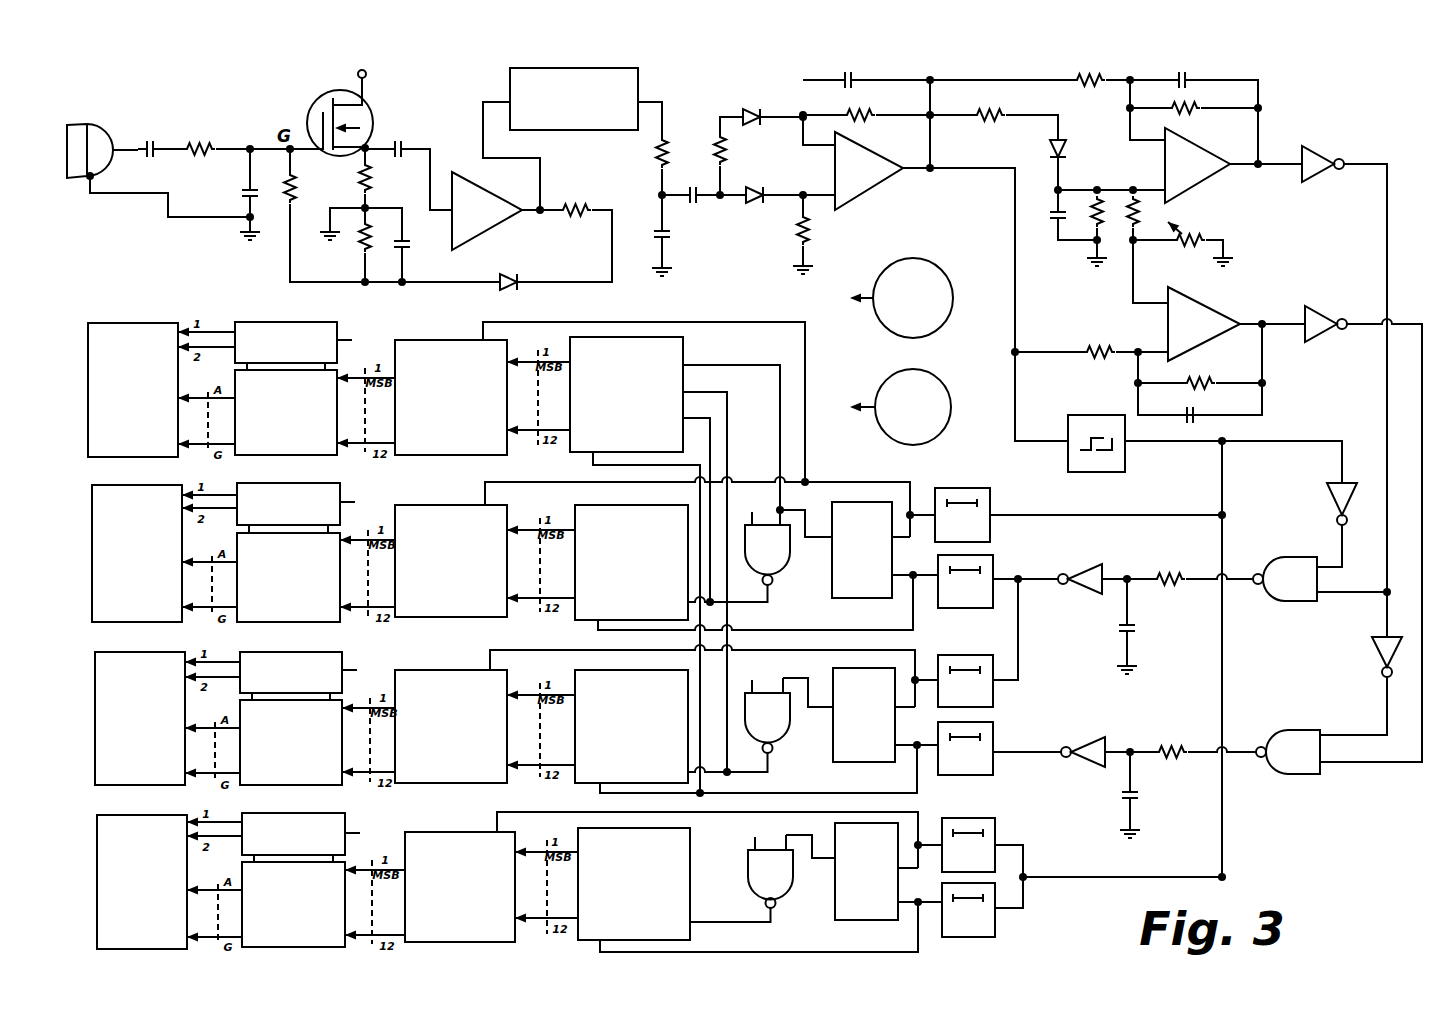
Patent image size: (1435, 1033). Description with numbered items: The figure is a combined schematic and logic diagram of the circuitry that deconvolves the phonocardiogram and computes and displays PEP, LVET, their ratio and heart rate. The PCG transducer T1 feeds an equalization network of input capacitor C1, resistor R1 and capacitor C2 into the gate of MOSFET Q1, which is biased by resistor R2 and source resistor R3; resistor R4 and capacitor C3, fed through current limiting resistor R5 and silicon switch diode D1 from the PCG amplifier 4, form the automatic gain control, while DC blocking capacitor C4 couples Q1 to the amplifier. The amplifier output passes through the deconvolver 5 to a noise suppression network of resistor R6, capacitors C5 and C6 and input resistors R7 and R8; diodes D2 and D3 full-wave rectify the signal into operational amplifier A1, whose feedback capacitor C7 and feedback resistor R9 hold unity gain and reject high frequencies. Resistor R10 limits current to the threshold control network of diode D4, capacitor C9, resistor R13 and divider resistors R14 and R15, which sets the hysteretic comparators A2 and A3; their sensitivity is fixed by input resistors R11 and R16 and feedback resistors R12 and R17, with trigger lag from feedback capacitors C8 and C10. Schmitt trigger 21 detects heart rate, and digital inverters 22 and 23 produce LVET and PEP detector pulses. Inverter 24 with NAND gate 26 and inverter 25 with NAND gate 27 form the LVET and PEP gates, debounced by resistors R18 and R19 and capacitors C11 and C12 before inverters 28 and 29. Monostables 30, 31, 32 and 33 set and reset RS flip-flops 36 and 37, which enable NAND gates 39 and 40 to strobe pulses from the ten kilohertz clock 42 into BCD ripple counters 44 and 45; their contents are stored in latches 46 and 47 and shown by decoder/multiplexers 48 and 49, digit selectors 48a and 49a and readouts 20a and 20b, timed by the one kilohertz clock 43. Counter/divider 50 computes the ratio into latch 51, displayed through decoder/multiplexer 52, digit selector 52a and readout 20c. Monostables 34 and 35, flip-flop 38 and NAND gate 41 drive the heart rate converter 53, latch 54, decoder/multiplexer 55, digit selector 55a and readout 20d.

The PCG transducer T1 is at (158, 160).
The input capacitor C1 is at (150, 135).
The resistor R1 is at (242, 135).
The capacitor C2 is at (231, 194).
The resistor R2 is at (392, 215).
The MOSFET Q1 is at (351, 113).
The source resistor R3 is at (378, 178).
The resistor R4 is at (350, 247).
The capacitor C3 is at (413, 259).
The DC blocking capacitor C4 is at (408, 162).
The PCG amplifier 4 is at (490, 190).
The current limiting resistor R5 is at (564, 231).
The silicon switch diode D1 is at (510, 272).
The deconvolver 5 is at (638, 100).
The resistor R6 is at (648, 166).
The capacitor C5 is at (677, 235).
The capacitor C6 is at (691, 208).
The input resistor R7 is at (736, 156).
The silicon switch diode D2 is at (773, 102).
The silicon switch diode D3 is at (777, 206).
The input resistor R8 is at (818, 234).
The operational amplifier A1 is at (869, 171).
The negative feedback capacitor C7 is at (858, 71).
The feedback resistor R9 is at (871, 105).
The resistor R10 is at (994, 125).
The silicon switch diode D4 is at (1076, 166).
The capacitor C9 is at (1060, 218).
The resistor R13 is at (1090, 216).
The divider resistor R14 is at (1142, 234).
The trimmer resistor R15 is at (1183, 238).
The input resistor R11 is at (1050, 67).
The feedback capacitor C8 is at (1214, 106).
The feedback resistor R12 is at (1194, 110).
The hysteretic comparator A2 is at (1197, 165).
The hysteretic comparator A3 is at (1204, 324).
The input resistor R16 is at (1091, 340).
The feedback resistor R17 is at (1200, 372).
The feedback capacitor C10 is at (1200, 407).
The Schmitt trigger 21 is at (1126, 462).
The digital inverter 22 is at (1344, 380).
The digital inverter 23 is at (1363, 534).
The logic inverter 24 is at (1330, 512).
The logical inverter 25 is at (1381, 660).
The NAND gate 26 is at (1290, 601).
The NAND gate 27 is at (1292, 774).
The logical inverter 28 is at (1060, 569).
The logical inverter 29 is at (1061, 741).
The resistor R18 is at (1159, 567).
The resistor R19 is at (1162, 740).
The capacitor C11 is at (1147, 626).
The capacitor C12 is at (1151, 795).
The one-microsecond monostable 30 is at (990, 540).
The one-microsecond monostable 31 is at (970, 608).
The one-microsecond monostable 32 is at (993, 705).
The one-microsecond monostable 33 is at (985, 775).
The one-microsecond monostable 34 is at (995, 826).
The one-microsecond monostable 35 is at (995, 928).
The RS flip-flop 36 is at (870, 598).
The RS flip-flop 37 is at (870, 762).
The RS flip-flop 38 is at (880, 920).
The NAND gate 39 is at (785, 570).
The NAND gate 40 is at (785, 738).
The NAND gate 41 is at (788, 895).
The 10 kilohertz clock 42 is at (935, 266).
The 1 kilohertz clock 43 is at (940, 378).
The 12-bit BCD ripple counter 44 is at (620, 573).
The 12-bit BCD ripple counter 45 is at (620, 737).
The 12-bit latch 46 is at (451, 571).
The 12-bit latch 47 is at (451, 737).
The 12-bit BCD to 7-segment decoder/multiplexer 48 is at (308, 622).
The digit selector/multiplexer 48a is at (340, 483).
The 12-bit BCD to 7-segment decoder/multiplexer 49 is at (311, 785).
The digit selector/multiplexer 49a is at (342, 652).
The 12-bit BCD counter/divider 50 is at (619, 405).
The 12-bit latch 51 is at (451, 407).
The 12-bit BCD to 7-segment decoder/multiplexer 52 is at (306, 456).
The digit selector/multiplexer 52a is at (337, 322).
The 12-bit heart rate converter 53 is at (625, 897).
The 12-bit H.R. latch 54 is at (460, 898).
The 12-bit BCD to 7-segment decoder/multiplexer 55 is at (314, 947).
The digit selector/multiplexer 55a is at (345, 813).
The LVET multiplexed readout 20a is at (86, 474).
The PEP multiplexed readout 20b is at (89, 641).
The PEP/LVET multiplexed readout 20c is at (82, 312).
The heart rate multiplexed readout 20d is at (91, 804).